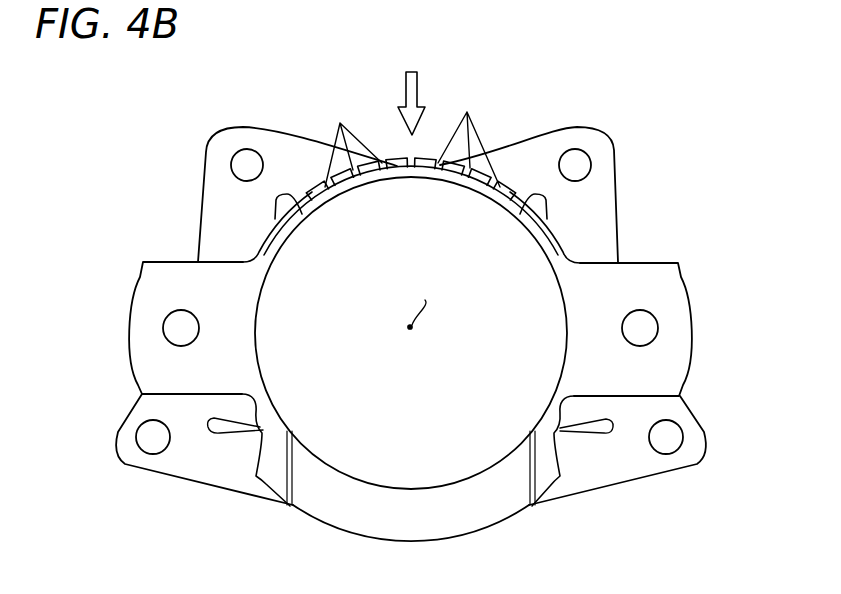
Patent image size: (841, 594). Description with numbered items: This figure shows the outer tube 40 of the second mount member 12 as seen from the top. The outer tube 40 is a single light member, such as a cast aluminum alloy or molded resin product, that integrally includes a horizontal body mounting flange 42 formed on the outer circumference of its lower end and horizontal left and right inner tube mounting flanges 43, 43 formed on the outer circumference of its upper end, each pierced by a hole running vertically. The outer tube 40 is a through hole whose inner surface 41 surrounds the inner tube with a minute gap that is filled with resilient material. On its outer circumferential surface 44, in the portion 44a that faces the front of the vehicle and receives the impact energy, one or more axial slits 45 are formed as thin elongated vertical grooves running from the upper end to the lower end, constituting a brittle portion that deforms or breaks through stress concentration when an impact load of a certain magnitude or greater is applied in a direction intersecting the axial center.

The second mount member 12 is at (640, 115).
The outer tube 40 is at (574, 247).
The inner surface of the outer tube 41 is at (340, 455).
The body mounting flange 42 is at (180, 460).
The inner tube mounting flange 43 is at (160, 287).
The outer circumferential surface 44 is at (263, 237).
The portion facing the front of the vehicle 44a is at (392, 158).
The axial slit 45 is at (340, 124).